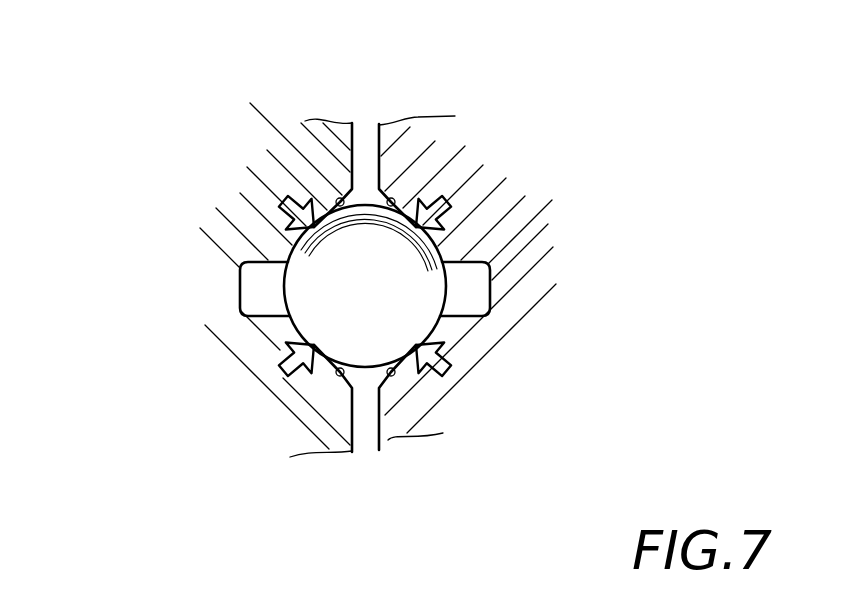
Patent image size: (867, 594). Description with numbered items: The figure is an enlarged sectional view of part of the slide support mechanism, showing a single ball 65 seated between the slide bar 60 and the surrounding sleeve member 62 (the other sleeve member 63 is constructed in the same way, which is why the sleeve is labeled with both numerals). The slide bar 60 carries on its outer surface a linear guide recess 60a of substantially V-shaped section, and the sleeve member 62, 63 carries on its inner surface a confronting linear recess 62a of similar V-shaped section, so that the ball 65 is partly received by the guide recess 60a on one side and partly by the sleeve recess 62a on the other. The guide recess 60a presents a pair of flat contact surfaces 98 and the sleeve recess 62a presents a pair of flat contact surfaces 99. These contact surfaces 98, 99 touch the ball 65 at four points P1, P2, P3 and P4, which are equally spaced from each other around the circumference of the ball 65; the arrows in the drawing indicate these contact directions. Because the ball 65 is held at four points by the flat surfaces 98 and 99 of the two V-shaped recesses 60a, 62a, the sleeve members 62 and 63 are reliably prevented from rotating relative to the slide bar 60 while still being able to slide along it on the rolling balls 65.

The slide bar 60 is at (310, 163).
The sleeve member 62 is at (428, 165).
The sleeve member 63 is at (504, 222).
The ball 65 is at (440, 303).
The linear guide recess 60a is at (262, 288).
The recess in second housing member 62a is at (478, 273).
The contact surfaces 98 is at (334, 203).
The contact surfaces 99 is at (393, 204).
The contact point P1 is at (318, 233).
The contact point P2 is at (320, 345).
The contact point P3 is at (426, 270).
The contact point P4 is at (433, 348).